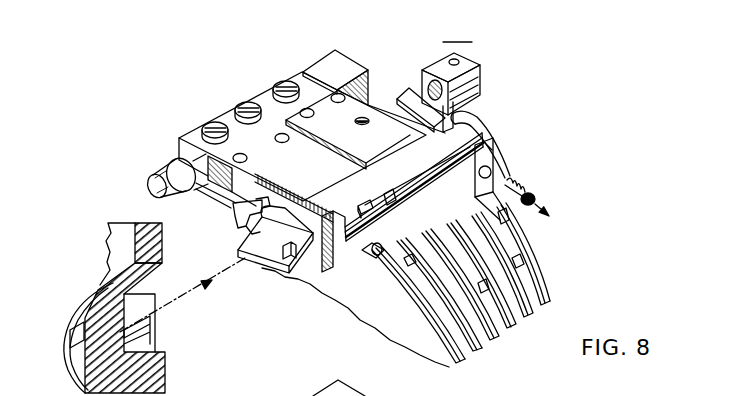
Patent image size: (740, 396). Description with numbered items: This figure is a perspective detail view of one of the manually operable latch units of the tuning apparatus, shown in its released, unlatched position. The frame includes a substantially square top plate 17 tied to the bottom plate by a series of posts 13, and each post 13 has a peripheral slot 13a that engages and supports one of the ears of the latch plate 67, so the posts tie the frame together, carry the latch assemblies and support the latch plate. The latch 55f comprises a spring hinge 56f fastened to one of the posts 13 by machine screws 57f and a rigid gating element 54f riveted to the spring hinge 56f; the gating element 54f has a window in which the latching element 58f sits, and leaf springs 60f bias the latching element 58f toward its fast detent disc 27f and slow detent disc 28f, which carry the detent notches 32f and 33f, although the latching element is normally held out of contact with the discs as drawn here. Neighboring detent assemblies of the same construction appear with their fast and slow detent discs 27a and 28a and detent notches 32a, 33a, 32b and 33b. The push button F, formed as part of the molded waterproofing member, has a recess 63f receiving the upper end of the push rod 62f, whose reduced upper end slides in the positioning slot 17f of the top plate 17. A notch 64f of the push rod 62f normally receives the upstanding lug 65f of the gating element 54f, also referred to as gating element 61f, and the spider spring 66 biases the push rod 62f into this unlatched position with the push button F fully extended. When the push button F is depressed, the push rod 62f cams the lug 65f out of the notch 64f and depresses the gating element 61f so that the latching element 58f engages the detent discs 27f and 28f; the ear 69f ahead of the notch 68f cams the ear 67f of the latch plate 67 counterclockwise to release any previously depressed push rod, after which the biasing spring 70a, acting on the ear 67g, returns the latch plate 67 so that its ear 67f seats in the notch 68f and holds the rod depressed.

The posts 13 is at (178, 160).
The peripheral slot 13a is at (425, 70).
The top plate 17 is at (266, 201).
The positioning slot 17f is at (246, 226).
The fast detent disc 27a is at (440, 322).
The fast detent disc 27f is at (540, 293).
The slow detent disc 28a is at (427, 309).
The slow detent disc 28f is at (530, 292).
The detent notch 32a is at (375, 258).
The detent notch 32b is at (405, 265).
The detent notch 32f is at (516, 262).
The detent notch 33a is at (390, 270).
The detent notch 33b is at (476, 340).
The detent notch 33f is at (505, 217).
The gating element 54f is at (262, 147).
The latch 55f is at (457, 34).
The spring hinge 56f is at (297, 81).
The machine screws 57f is at (253, 102).
The latching element 58f is at (531, 192).
The leaf springs 60f is at (368, 102).
The gating element 61f is at (488, 152).
The push rod 62f is at (258, 243).
The recess 63f is at (122, 328).
The notch 64f is at (392, 192).
The upstanding lug 65f is at (377, 181).
The spider spring 66 is at (470, 120).
The latch plate 67 is at (517, 248).
The ear 67f is at (410, 102).
The ear 67g is at (500, 164).
The notch 68f is at (437, 127).
The ear 69f is at (473, 79).
The biasing spring 70a is at (516, 184).
The push button F is at (75, 313).